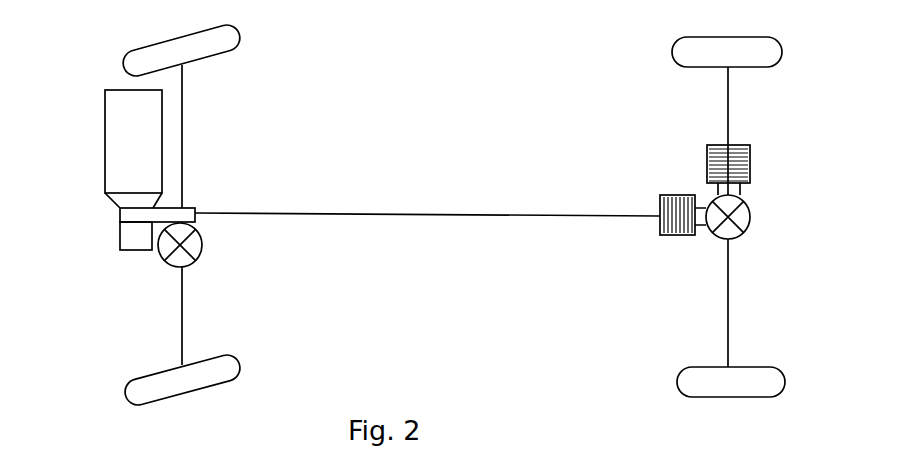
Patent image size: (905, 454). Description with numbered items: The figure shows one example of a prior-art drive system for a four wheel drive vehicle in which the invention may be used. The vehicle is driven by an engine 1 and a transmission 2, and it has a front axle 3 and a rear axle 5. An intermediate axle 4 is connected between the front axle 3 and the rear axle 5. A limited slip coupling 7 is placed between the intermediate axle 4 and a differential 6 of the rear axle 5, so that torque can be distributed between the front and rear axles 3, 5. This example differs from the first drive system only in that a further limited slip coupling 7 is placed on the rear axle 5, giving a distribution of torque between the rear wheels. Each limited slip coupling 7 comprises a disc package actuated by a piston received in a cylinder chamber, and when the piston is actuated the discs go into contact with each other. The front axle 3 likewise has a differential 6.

The engine 1 is at (112, 172).
The transmission 2 is at (195, 212).
The front axle 3 is at (182, 130).
The intermediate axle 4 is at (412, 215).
The rear axle 5 is at (728, 315).
The differential 6 is at (198, 245).
The limited slip coupling 7 is at (707, 153).